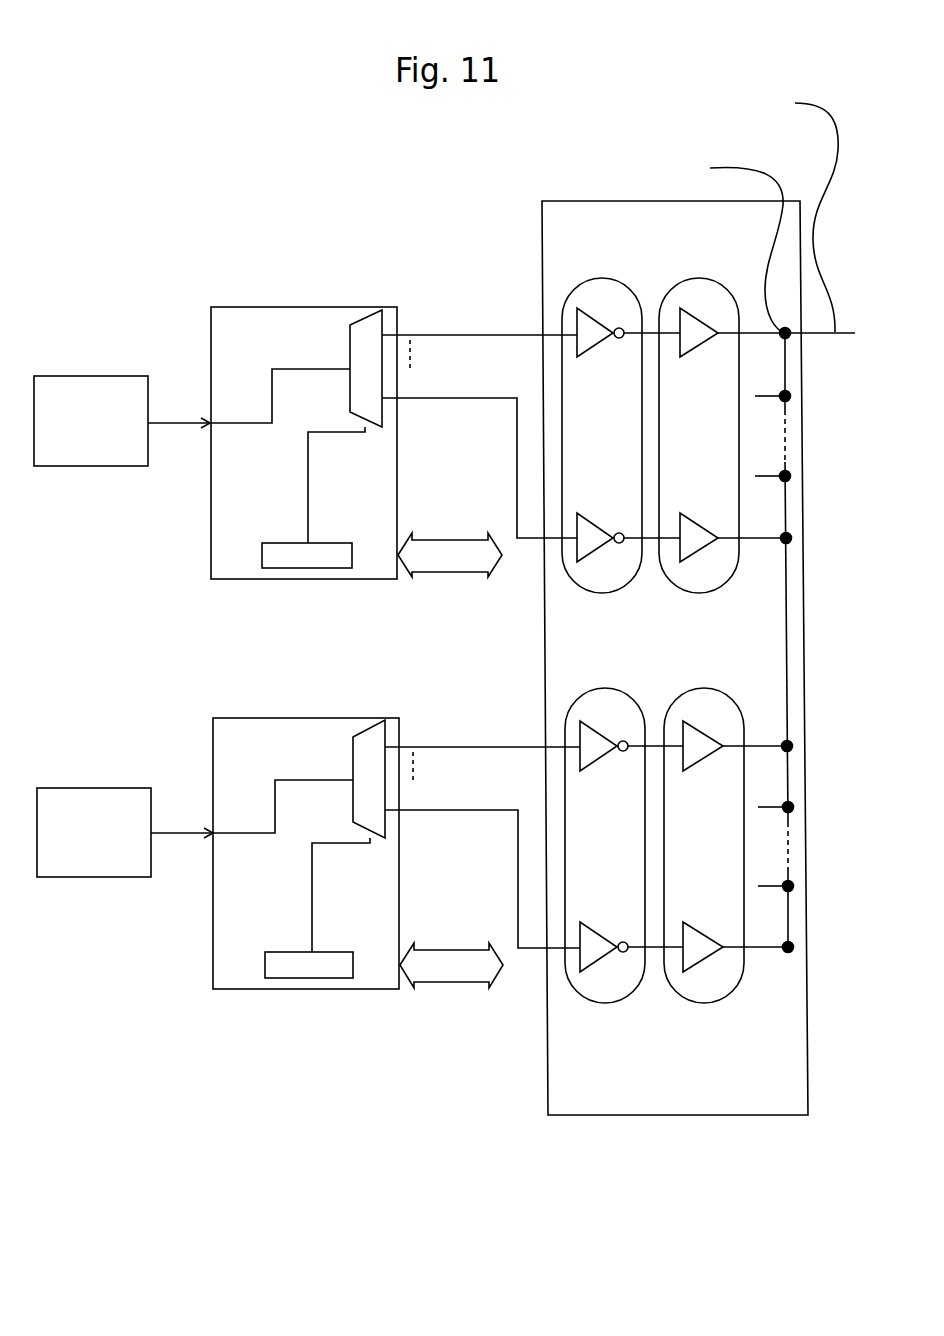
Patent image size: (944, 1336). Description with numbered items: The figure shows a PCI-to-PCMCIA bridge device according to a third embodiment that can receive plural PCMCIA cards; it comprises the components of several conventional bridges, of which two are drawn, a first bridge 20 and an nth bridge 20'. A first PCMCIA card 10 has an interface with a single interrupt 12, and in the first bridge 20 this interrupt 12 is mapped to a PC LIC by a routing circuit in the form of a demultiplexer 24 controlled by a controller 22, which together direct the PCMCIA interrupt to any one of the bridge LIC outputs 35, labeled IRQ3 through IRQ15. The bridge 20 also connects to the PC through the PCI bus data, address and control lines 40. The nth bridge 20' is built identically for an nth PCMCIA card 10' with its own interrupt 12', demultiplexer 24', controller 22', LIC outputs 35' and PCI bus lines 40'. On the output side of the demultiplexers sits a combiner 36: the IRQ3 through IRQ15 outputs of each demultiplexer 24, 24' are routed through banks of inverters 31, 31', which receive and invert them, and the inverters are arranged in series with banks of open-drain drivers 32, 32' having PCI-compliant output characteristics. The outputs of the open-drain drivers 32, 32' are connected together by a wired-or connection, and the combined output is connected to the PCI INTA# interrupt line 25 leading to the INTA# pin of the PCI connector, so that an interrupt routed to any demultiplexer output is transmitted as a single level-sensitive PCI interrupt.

The PCMCIA card 10 is at (113, 449).
The interrupt 12 is at (172, 456).
The PCI-to-PCMCIA bridge 20 is at (270, 418).
The controller 22 is at (295, 535).
The demultiplexer 24 is at (322, 368).
The INTA# line 25 is at (830, 362).
The bank of inverters 31 is at (567, 407).
The bank of open-drain drivers 32 is at (705, 406).
The bridge LIC outputs 35 is at (479, 400).
The combiner 36 is at (548, 1033).
The PCI bus data, address and control lines 40 is at (429, 588).
The PCMCIA card 10' is at (117, 859).
The interrupt 12' is at (175, 866).
The PCI-to-PCMCIA bridge 20' is at (272, 829).
The controller 22' is at (299, 946).
The demultiplexer 24' is at (324, 779).
The bank of inverters 31' is at (571, 817).
The bank of open-drain drivers 32' is at (708, 820).
The bridge LIC outputs 35' is at (482, 808).
The PCI bus data, address and control lines 40' is at (431, 998).